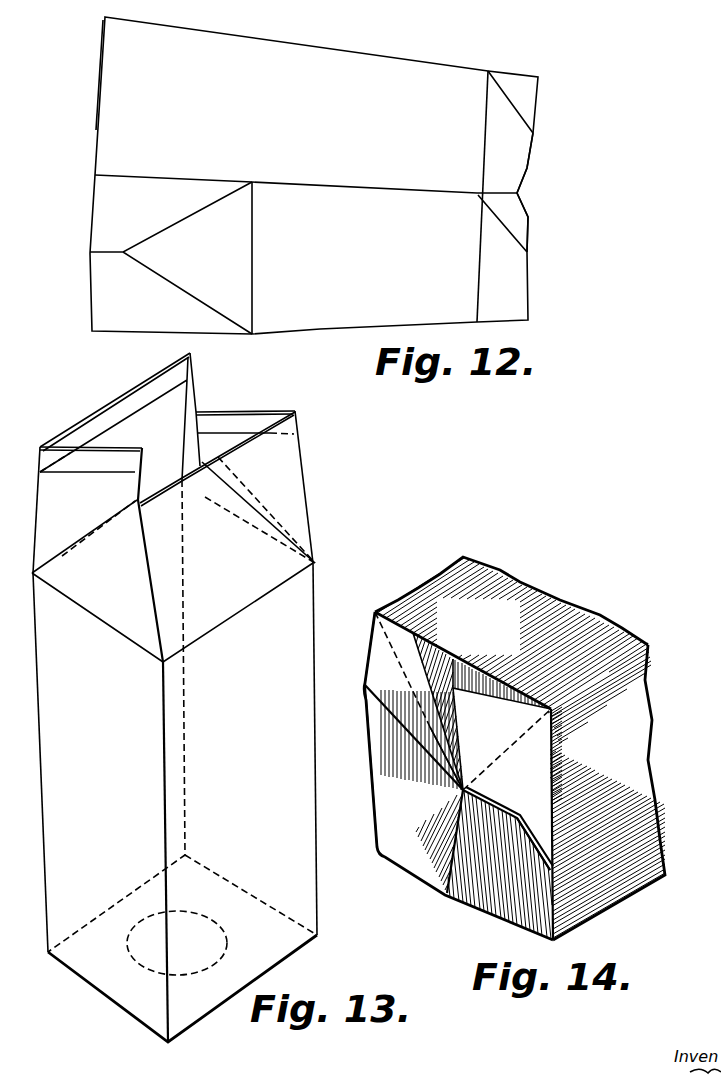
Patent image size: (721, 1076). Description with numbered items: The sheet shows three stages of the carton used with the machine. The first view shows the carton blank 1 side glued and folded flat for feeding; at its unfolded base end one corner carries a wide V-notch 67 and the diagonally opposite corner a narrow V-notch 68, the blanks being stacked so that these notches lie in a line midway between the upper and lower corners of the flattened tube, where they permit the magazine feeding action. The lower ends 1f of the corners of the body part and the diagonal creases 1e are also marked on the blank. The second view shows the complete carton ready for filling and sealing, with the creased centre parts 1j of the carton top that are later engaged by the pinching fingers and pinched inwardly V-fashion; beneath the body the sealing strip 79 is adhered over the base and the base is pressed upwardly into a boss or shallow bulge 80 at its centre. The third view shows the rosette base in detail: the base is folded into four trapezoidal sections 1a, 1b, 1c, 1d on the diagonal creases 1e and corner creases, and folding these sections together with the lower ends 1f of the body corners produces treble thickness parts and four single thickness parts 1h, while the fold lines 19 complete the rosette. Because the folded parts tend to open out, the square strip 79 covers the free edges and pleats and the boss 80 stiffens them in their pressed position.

In FIG. 12, the carton blank 1 is at (353, 77).
In FIG. 14, the trapezoidal base section 1a is at (383, 658).
In FIG. 14, the trapezoidal base section 1b is at (512, 775).
In FIG. 14, the trapezoidal base section 1c is at (472, 873).
In FIG. 14, the trapezoidal base section 1d is at (407, 813).
In FIG. 12, the diagonal crease 1e is at (520, 118).
In FIG. 14, the diagonal crease 1e is at (503, 753).
In FIG. 12, the lower end of body corner 1f is at (488, 117).
In FIG. 14, the lower end of body corner 1f is at (457, 650).
In FIG. 14, the single thickness part 1h is at (417, 663).
In FIG. 13, the creased centre part of carton top 1j is at (212, 408).
In FIG. 14, the fold line 19 is at (388, 675).
In FIG. 12, the wide V-notch 67 is at (527, 170).
In FIG. 14, the wide V-notch 67 is at (432, 728).
In FIG. 12, the narrow V-notch 68 is at (520, 197).
In FIG. 14, the narrow V-notch 68 is at (523, 823).
In FIG. 13, the sealing strip 79 is at (108, 998).
In FIG. 13, the boss 80 is at (226, 928).